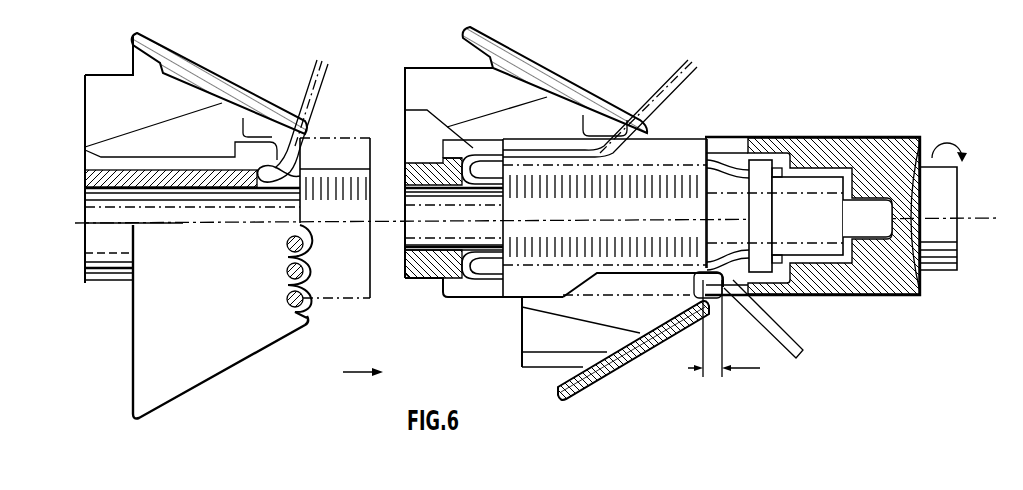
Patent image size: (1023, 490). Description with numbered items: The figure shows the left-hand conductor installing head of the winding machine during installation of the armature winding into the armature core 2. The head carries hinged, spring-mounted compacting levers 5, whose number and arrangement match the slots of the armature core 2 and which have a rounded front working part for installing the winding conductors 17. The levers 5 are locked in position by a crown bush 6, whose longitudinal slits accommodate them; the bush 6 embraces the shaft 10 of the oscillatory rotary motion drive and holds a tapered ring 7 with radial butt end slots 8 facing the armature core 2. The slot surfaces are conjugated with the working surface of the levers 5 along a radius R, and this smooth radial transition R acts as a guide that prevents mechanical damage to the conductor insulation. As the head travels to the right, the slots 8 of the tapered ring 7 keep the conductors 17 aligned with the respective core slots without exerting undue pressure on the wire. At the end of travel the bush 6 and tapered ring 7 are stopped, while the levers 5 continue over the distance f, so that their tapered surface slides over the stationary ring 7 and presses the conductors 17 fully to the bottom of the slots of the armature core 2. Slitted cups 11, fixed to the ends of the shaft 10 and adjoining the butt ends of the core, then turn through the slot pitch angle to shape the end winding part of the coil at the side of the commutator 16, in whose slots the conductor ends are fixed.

The armature core 2 is at (675, 207).
The compacting levers 5 is at (180, 102).
The crown bush 6 is at (550, 362).
The tapered ring 7 is at (233, 353).
The radial butt end slots 8 is at (315, 275).
The shaft 10 is at (942, 188).
The slitted cups 11 is at (425, 267).
The commutator 16 is at (805, 187).
The winding conductors 17 is at (315, 80).
The radius R is at (585, 141).
The distance f is at (724, 328).